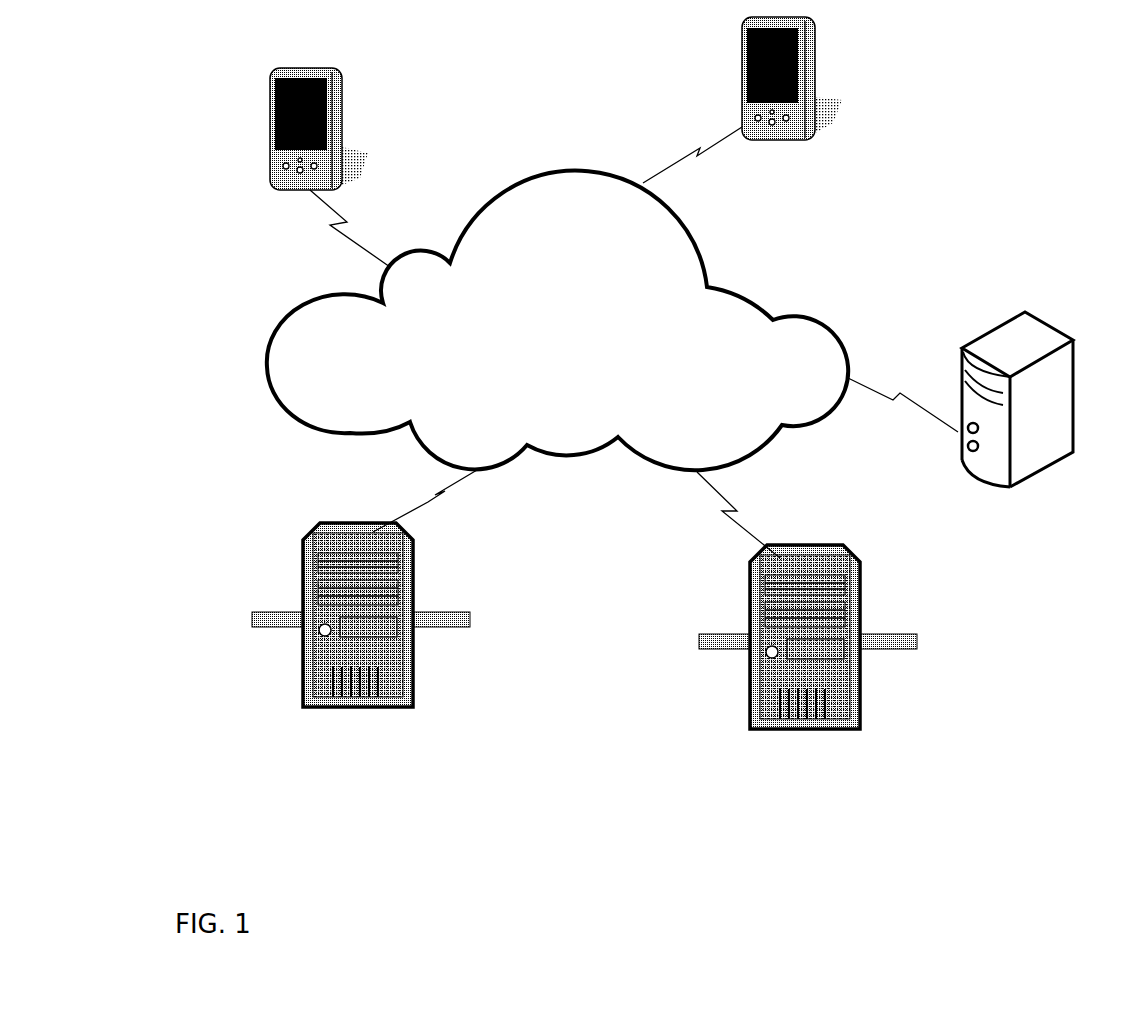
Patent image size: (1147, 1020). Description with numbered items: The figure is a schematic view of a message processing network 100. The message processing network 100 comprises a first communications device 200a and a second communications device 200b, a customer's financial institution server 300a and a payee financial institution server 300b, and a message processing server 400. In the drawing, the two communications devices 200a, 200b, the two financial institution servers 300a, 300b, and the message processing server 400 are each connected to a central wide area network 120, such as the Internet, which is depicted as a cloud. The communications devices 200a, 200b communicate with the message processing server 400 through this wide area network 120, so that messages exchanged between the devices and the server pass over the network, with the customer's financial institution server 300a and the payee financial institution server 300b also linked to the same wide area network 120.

The message processing network 100 is at (635, 841).
The wide area network 120 is at (573, 458).
The first communications device 200a is at (343, 104).
The second communications device 200b is at (815, 127).
The customer's financial institution server 300a is at (304, 667).
The payee financial institution server 300b is at (753, 693).
The message processing server 400 is at (1050, 337).